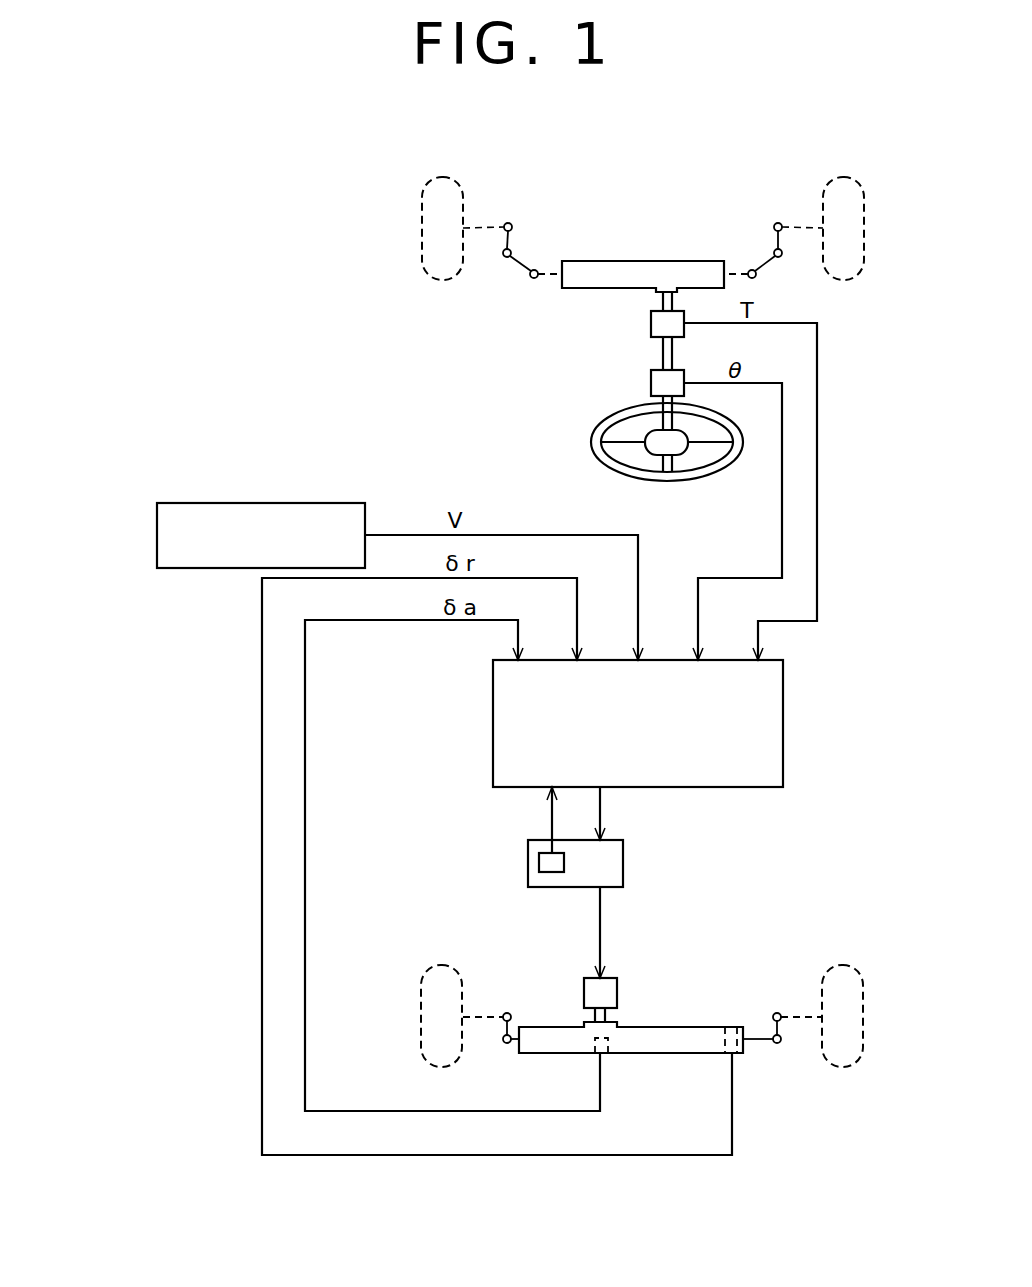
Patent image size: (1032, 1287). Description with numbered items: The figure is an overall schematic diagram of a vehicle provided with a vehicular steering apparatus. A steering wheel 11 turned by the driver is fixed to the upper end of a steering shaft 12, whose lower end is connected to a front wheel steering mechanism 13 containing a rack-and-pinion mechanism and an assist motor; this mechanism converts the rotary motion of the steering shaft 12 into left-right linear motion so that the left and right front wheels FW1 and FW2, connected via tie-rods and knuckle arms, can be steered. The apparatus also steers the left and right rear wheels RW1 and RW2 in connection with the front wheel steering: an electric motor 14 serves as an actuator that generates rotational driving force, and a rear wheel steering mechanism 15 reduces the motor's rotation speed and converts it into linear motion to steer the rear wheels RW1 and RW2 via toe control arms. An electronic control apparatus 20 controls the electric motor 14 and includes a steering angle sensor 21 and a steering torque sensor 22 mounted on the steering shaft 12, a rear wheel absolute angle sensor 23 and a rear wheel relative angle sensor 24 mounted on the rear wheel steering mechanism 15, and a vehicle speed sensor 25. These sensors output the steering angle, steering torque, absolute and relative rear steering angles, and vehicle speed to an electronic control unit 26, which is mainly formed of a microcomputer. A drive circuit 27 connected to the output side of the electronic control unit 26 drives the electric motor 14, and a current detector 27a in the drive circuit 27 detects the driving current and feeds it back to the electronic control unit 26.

The steering wheel 11 is at (705, 483).
The steering shaft 12 is at (652, 398).
The front wheel steering mechanism 13 is at (598, 261).
The electric motor 14 is at (590, 978).
The rear wheel steering mechanism 15 is at (575, 1027).
The electronic control apparatus 20 is at (295, 462).
The steering angle sensor 21 is at (651, 383).
The steering torque sensor 22 is at (651, 323).
The rear wheel absolute angle sensor 23 is at (617, 1045).
The rear wheel relative angle sensor 24 is at (732, 1027).
The vehicle speed sensor 25 is at (157, 533).
The electronic control unit 26 is at (783, 700).
The drive circuit 27 is at (620, 840).
The current detector 27a is at (548, 853).
The front wheel FW1 is at (838, 177).
The front wheel FW2 is at (445, 177).
The rear wheel RW1 is at (838, 965).
The rear wheel RW2 is at (445, 965).